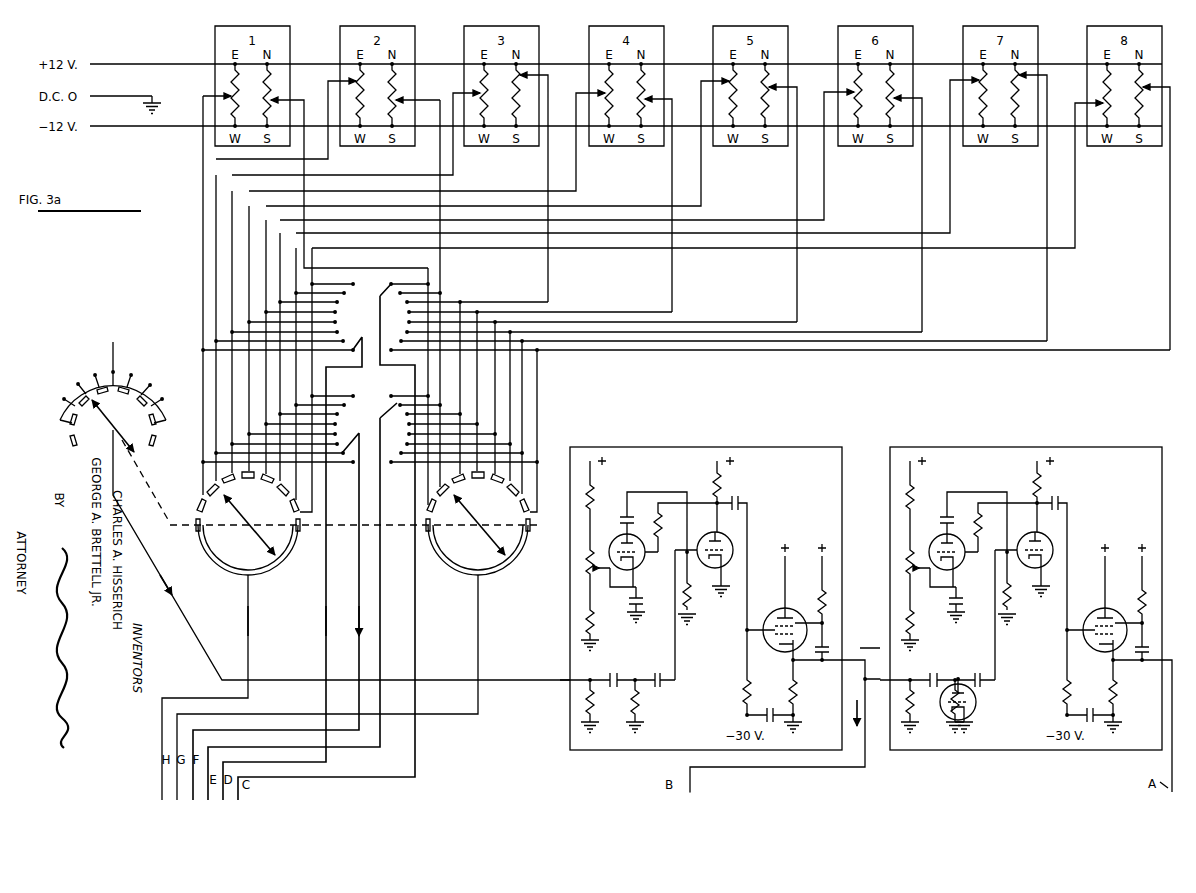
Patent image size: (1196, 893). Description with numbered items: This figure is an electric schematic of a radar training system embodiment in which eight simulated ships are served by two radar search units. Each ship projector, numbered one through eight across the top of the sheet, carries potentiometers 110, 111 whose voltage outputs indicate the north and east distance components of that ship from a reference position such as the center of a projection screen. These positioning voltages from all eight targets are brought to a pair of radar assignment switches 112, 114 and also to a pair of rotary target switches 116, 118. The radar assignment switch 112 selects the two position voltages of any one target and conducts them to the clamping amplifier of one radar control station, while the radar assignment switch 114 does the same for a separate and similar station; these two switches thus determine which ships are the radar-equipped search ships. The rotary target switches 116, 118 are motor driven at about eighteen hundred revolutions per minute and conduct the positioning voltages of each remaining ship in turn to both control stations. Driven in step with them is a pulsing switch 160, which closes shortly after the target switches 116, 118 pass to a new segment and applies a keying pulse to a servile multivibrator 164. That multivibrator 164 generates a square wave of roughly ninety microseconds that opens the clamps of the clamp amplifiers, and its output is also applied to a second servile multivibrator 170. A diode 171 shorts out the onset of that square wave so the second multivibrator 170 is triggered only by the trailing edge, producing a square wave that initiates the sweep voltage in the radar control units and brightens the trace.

The potentiometer 110 is at (230, 86).
The potentiometer 111 is at (267, 77).
The radar assignment switch 112 is at (360, 309).
The radar assignment switch 114 is at (364, 421).
The rotary target switch 116 is at (254, 575).
The rotary target switch 118 is at (486, 575).
The pulsing switch 160 is at (137, 380).
The servile multivibrator 164 is at (761, 458).
The second servile multivibrator 170 is at (1063, 458).
The diode 171 is at (972, 702).